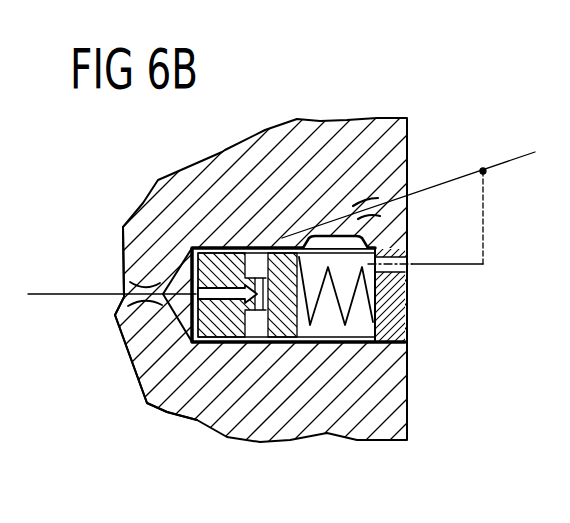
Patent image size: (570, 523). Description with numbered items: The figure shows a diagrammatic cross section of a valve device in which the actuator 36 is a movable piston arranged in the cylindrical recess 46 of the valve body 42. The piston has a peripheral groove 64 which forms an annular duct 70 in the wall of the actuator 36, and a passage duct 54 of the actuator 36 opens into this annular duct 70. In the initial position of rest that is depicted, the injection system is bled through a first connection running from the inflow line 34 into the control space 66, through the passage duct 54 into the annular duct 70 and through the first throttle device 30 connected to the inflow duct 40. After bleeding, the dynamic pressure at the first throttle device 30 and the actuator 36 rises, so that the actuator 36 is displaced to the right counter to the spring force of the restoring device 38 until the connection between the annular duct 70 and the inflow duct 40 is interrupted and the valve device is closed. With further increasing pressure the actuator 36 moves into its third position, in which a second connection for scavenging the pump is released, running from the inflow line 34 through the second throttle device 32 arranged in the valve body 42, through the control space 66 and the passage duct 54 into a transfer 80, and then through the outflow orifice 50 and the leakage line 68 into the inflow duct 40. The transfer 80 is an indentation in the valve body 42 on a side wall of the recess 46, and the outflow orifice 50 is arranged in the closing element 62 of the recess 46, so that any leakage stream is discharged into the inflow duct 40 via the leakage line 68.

The first throttle device 30 is at (353, 206).
The second throttle device 32 is at (138, 282).
The inflow line 34 is at (70, 294).
The actuator 36 is at (147, 405).
The restoring device 38 is at (367, 347).
The inflow duct 40 is at (511, 162).
The valve body 42 is at (302, 128).
The cylindrical recess 46 is at (330, 327).
The outflow orifice 50 is at (407, 267).
The passage duct 54 is at (200, 246).
The closing element 62 is at (397, 327).
The peripheral groove 64 is at (255, 312).
The control space 66 is at (125, 351).
The leakage line 68 is at (484, 205).
The annular duct 70 is at (257, 268).
The transfer 80 is at (364, 238).